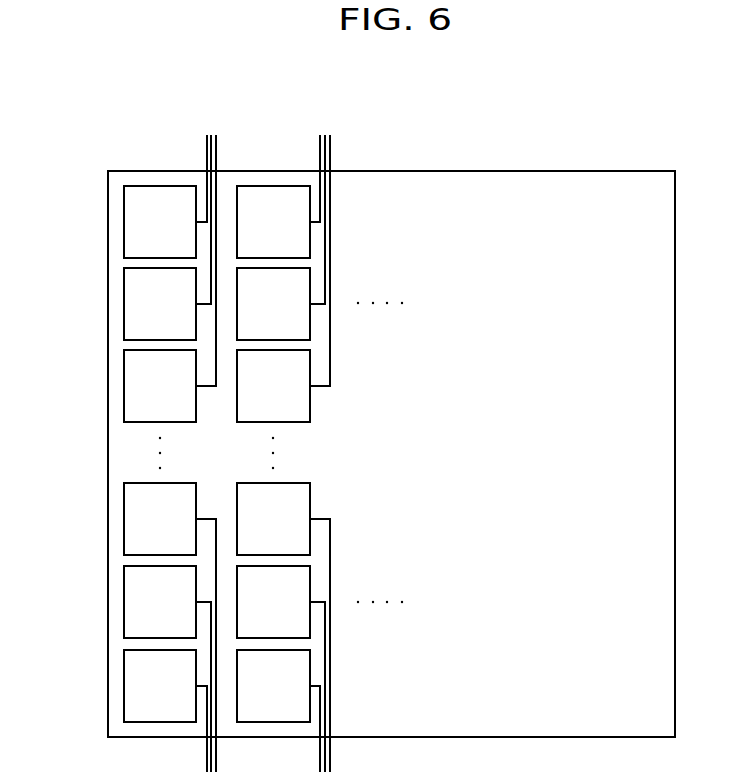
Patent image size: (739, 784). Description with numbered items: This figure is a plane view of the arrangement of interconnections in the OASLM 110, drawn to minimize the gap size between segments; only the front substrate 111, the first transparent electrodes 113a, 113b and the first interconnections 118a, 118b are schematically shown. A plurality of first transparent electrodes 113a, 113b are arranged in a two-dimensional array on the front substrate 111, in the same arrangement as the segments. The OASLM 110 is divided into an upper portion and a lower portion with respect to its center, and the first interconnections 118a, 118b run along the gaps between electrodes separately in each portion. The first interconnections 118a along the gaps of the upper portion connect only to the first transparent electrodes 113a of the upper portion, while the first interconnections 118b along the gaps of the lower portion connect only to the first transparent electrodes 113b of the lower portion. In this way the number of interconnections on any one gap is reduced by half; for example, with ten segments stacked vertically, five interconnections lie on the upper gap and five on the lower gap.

The OASLM 110 is at (580, 106).
The front substrate 111 is at (623, 192).
The first transparent electrodes of the upper portion 113a is at (132, 223).
The first transparent electrodes of the lower portion 113b is at (132, 688).
The first interconnections of the upper portion 118a is at (218, 152).
The first interconnections of the lower portion 118b is at (207, 755).